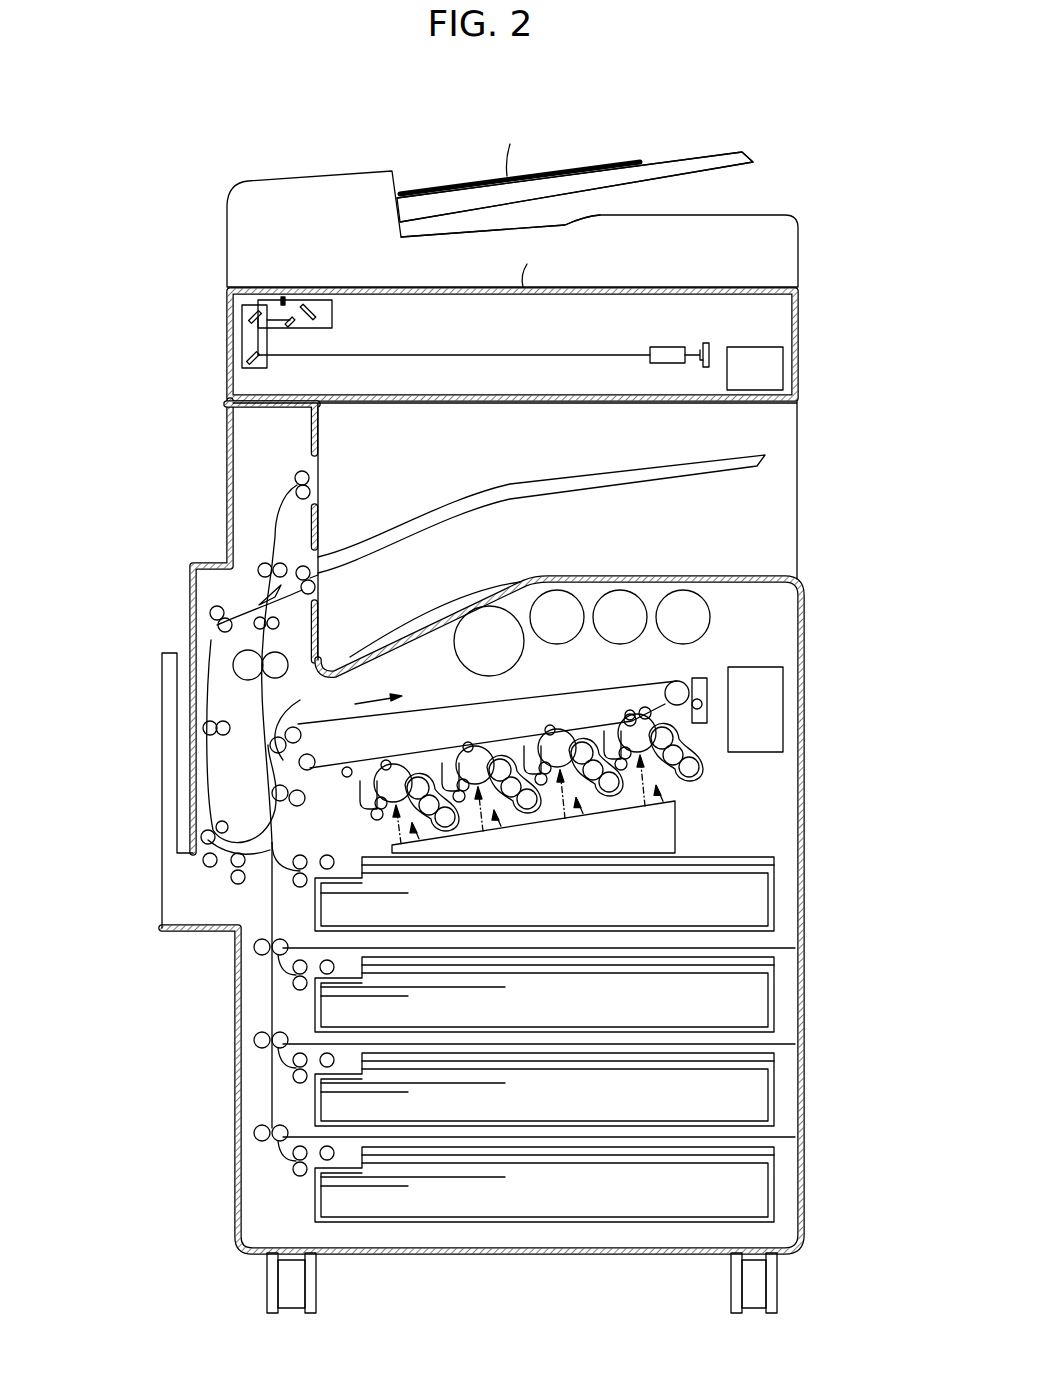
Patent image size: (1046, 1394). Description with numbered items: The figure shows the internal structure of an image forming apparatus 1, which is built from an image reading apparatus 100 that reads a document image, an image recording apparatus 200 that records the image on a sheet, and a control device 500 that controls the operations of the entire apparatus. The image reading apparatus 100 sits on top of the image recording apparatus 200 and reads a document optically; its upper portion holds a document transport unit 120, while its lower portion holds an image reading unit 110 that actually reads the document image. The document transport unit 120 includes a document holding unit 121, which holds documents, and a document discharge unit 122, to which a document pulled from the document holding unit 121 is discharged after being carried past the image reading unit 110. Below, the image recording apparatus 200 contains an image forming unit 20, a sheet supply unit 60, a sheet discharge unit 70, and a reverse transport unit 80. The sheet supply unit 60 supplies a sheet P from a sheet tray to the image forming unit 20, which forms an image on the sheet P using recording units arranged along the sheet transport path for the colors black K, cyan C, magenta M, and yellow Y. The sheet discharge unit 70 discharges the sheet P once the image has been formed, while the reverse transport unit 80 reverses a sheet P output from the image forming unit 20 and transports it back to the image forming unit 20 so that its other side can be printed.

The image forming apparatus 1 is at (168, 147).
The image reading apparatus 100 is at (107, 225).
The image reading unit 110 is at (214, 367).
The document transport unit 120 is at (214, 252).
The document holding unit 121 is at (690, 155).
The document discharge unit 122 is at (575, 222).
The image recording apparatus 200 is at (214, 460).
The image forming unit 20 is at (730, 623).
The sheet supply unit 60 is at (271, 1175).
The sheet discharge unit 70 is at (258, 535).
The reverse transport unit 80 is at (204, 761).
The control device 500 is at (785, 678).
The black K is at (489, 606).
The cyan C is at (556, 590).
The magenta M is at (622, 590).
The yellow Y is at (688, 590).
The sheet P is at (751, 855).